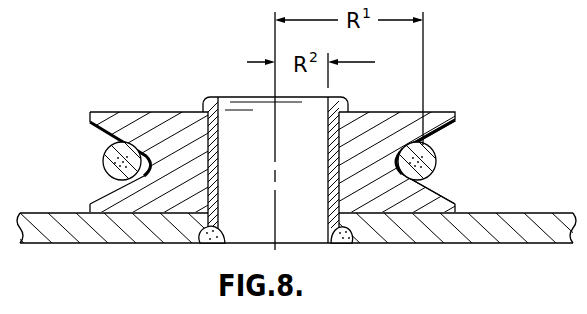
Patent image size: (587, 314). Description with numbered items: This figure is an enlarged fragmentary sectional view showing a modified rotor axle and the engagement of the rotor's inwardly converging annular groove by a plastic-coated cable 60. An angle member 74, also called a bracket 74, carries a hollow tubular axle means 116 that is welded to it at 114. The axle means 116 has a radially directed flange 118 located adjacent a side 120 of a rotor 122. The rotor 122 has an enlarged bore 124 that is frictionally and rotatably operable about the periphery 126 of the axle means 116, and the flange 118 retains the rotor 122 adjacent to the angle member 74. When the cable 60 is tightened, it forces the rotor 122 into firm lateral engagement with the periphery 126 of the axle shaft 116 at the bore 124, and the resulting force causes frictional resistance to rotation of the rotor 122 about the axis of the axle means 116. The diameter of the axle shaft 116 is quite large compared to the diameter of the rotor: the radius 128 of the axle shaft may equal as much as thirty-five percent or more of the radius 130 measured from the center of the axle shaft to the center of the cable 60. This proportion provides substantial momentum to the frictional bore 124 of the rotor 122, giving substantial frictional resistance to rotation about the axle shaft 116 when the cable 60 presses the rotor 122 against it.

The cable 60 is at (103, 152).
The angle member 74 is at (46, 217).
The weld 114 is at (205, 243).
The hollow tubular axle means 116 is at (221, 132).
The radially directed flange 118 is at (199, 110).
The side of rotor 120 is at (132, 111).
The rotor 122 is at (390, 118).
The enlarged bore 124 is at (425, 193).
The periphery of axle means 126 is at (422, 113).
The radius of axle shaft 128 is at (318, 66).
The radius to center of cable 130 is at (388, 17).